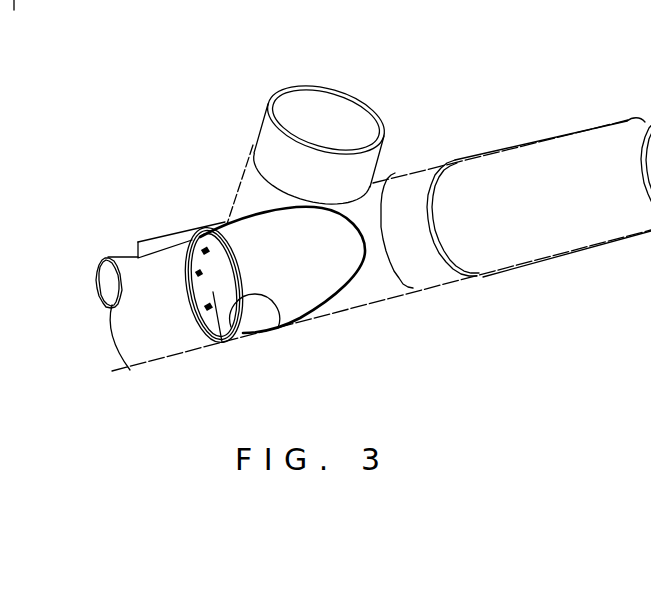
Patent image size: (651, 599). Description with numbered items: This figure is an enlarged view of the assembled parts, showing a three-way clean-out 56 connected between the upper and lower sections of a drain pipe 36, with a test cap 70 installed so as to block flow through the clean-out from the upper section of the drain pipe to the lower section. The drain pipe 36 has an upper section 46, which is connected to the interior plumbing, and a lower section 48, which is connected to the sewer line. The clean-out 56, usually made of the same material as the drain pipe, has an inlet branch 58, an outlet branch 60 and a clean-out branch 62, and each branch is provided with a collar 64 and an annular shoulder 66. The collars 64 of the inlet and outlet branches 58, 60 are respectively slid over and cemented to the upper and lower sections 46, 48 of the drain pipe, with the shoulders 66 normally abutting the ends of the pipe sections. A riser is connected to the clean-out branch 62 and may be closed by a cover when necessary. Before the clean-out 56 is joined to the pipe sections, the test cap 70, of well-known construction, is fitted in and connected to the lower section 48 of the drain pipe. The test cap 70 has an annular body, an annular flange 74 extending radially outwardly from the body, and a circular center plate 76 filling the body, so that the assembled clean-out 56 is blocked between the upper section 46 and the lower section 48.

The drain pipe 36 is at (537, 260).
The upper section 46 is at (618, 120).
The lower section 48 is at (125, 260).
The three-way clean-out 56 is at (345, 82).
The inlet branch 58 is at (362, 295).
The outlet branch 60 is at (217, 222).
The clean-out branch 62 is at (257, 175).
The collar 64 is at (267, 108).
The annular shoulder 66 is at (260, 300).
The test cap 70 is at (200, 318).
The annular flange 74 is at (226, 341).
The circular center plate 76 is at (222, 342).